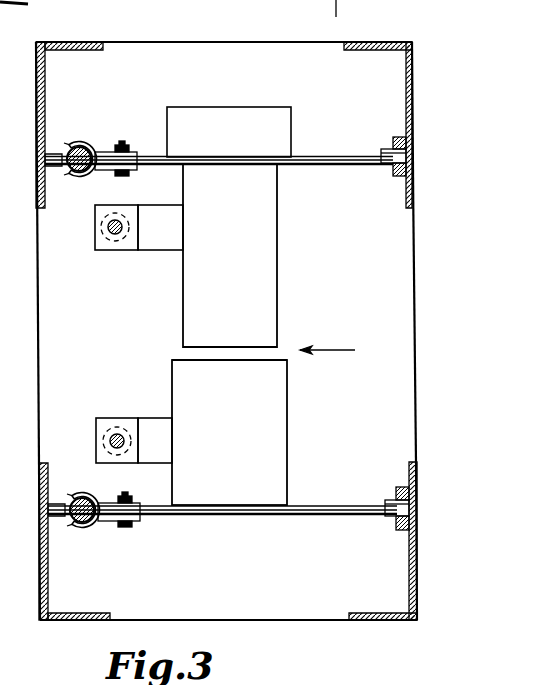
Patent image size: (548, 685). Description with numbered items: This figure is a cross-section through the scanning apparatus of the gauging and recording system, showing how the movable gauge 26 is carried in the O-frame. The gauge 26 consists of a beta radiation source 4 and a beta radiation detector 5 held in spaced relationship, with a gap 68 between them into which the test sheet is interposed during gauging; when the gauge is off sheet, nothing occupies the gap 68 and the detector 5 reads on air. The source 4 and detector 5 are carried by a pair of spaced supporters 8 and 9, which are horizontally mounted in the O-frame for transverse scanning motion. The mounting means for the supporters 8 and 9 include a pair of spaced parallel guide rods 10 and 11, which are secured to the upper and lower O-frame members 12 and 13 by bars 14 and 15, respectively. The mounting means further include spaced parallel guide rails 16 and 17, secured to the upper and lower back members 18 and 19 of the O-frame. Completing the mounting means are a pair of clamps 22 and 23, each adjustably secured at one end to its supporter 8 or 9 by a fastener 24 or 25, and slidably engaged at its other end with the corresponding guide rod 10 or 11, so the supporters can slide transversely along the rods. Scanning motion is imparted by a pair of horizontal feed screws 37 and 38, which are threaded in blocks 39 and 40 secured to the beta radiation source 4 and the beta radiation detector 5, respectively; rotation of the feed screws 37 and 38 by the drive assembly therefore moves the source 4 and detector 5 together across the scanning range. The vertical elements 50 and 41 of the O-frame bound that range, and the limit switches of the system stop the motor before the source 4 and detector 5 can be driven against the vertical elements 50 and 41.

The beta radiation source 4 is at (278, 209).
The beta radiation detector 5 is at (288, 401).
The supporter 8 is at (331, 134).
The supporter 9 is at (311, 516).
The guide rod 10 is at (78, 148).
The guide rod 11 is at (83, 522).
The upper O-frame member 12 is at (46, 77).
The lower O-frame member 13 is at (42, 556).
The bar 14 is at (47, 165).
The bar 15 is at (49, 513).
The guide rail 16 is at (408, 172).
The guide rail 17 is at (410, 518).
The upper back member 18 is at (413, 84).
The lower back member 19 is at (418, 548).
The clamp 22 is at (88, 146).
The clamp 23 is at (96, 528).
The fastener 24 is at (122, 144).
The fastener 25 is at (134, 528).
The movable gauge 26 is at (340, 352).
The horizontal feed screw 37 is at (110, 236).
The horizontal feed screw 38 is at (118, 432).
The block 39 is at (136, 251).
The block 40 is at (143, 435).
The vertical element 41 is at (246, 53).
The vertical element 50 is at (208, 335).
The gap 68 is at (238, 361).